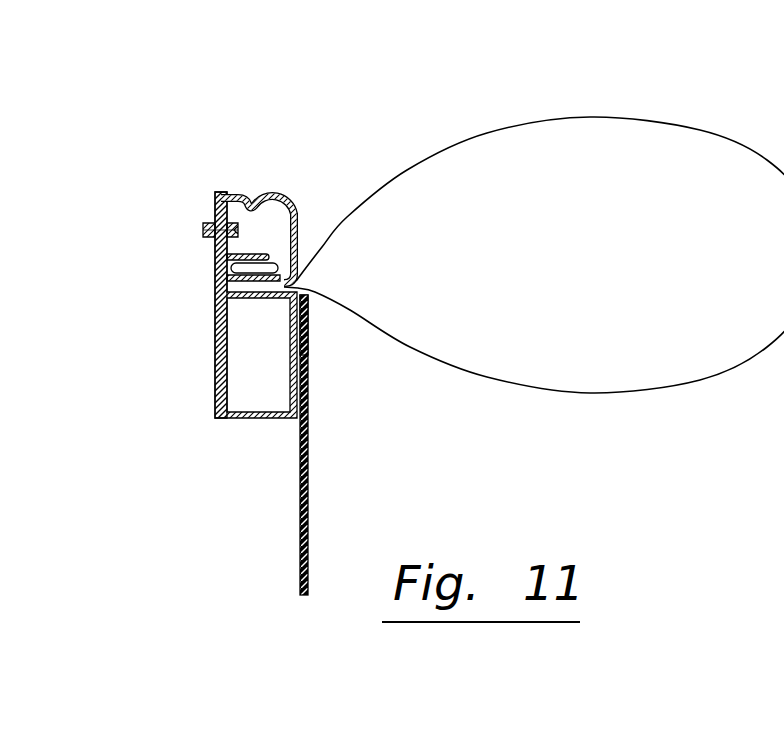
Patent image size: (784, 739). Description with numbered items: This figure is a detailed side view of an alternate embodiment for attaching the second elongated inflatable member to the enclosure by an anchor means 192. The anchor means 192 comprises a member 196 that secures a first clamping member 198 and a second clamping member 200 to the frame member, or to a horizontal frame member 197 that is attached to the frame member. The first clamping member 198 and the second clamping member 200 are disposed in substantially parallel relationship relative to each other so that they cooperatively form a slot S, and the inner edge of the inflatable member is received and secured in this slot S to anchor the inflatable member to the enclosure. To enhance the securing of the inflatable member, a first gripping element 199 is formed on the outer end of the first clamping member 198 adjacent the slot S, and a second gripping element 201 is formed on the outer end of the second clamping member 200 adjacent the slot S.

The anchor means 192 is at (239, 446).
The member 196 is at (216, 198).
The horizontal frame member 197 is at (302, 345).
The first clamping member 198 is at (270, 258).
The first gripping element 199 is at (296, 210).
The second clamping member 200 is at (215, 308).
The second gripping element 201 is at (280, 280).
The slot S is at (279, 261).